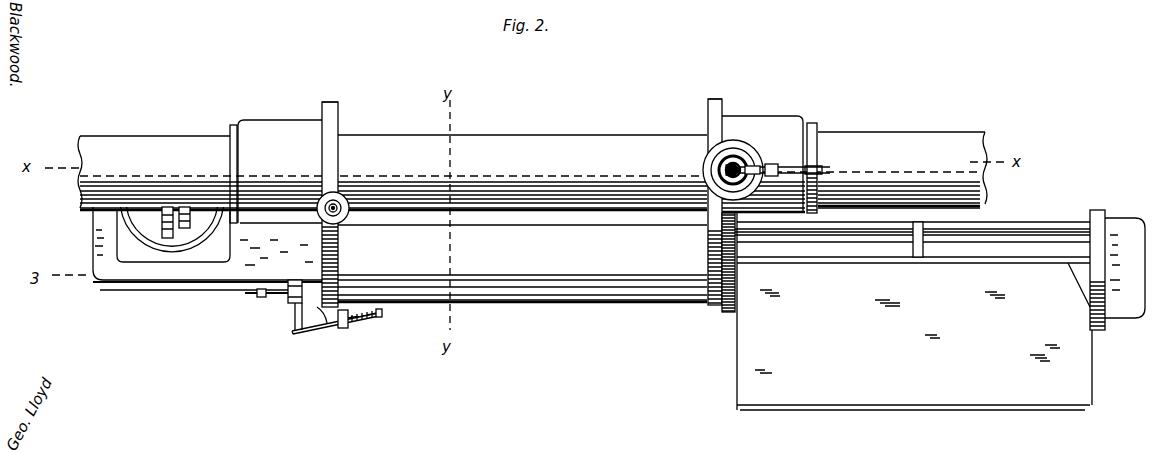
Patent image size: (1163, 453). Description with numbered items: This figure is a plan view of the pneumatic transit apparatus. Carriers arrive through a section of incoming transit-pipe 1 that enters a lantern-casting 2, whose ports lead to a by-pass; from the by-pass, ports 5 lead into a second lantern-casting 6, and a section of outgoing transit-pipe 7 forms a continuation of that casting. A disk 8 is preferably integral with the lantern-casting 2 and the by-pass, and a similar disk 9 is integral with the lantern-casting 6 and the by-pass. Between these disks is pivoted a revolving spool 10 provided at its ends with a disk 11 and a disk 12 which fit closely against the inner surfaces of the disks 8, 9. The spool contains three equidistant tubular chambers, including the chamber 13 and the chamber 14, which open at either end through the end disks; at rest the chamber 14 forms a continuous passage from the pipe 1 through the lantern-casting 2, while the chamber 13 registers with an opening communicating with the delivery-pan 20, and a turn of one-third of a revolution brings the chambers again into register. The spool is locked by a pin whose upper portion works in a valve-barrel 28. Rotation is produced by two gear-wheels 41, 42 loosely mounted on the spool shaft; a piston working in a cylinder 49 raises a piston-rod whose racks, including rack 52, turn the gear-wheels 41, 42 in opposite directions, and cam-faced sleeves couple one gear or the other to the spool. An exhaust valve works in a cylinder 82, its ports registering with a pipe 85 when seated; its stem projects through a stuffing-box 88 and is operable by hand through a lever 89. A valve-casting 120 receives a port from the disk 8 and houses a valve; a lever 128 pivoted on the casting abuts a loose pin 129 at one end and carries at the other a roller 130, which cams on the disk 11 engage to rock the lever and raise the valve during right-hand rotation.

The incoming transit-pipe 1 is at (146, 146).
The lantern-casting 2 is at (267, 126).
The ports 5 is at (207, 263).
The lantern-casting 6 is at (781, 123).
The outgoing transit-pipe 7 is at (877, 139).
The disk 8 is at (322, 103).
The disk 9 is at (718, 99).
The revolving spool 10 is at (534, 142).
The disk 11 is at (341, 121).
The disk 12 is at (707, 123).
The tubular chamber 13 is at (522, 263).
The tubular chamber 14 is at (522, 187).
The delivery-pan 20 is at (940, 310).
The valve-barrel 28 is at (327, 200).
The gear-wheel 41 is at (157, 200).
The gear-wheel 42 is at (200, 207).
The cylinder 49 is at (155, 233).
The rack 52 is at (166, 238).
The cylinder 82 is at (704, 160).
The pipe 85 is at (830, 170).
The stuffing-box 88 is at (728, 172).
The lever 89 is at (759, 167).
The valve-casting 120 is at (292, 303).
The lever 128 is at (320, 330).
The loose pin 129 is at (300, 320).
The roller 130 is at (348, 324).